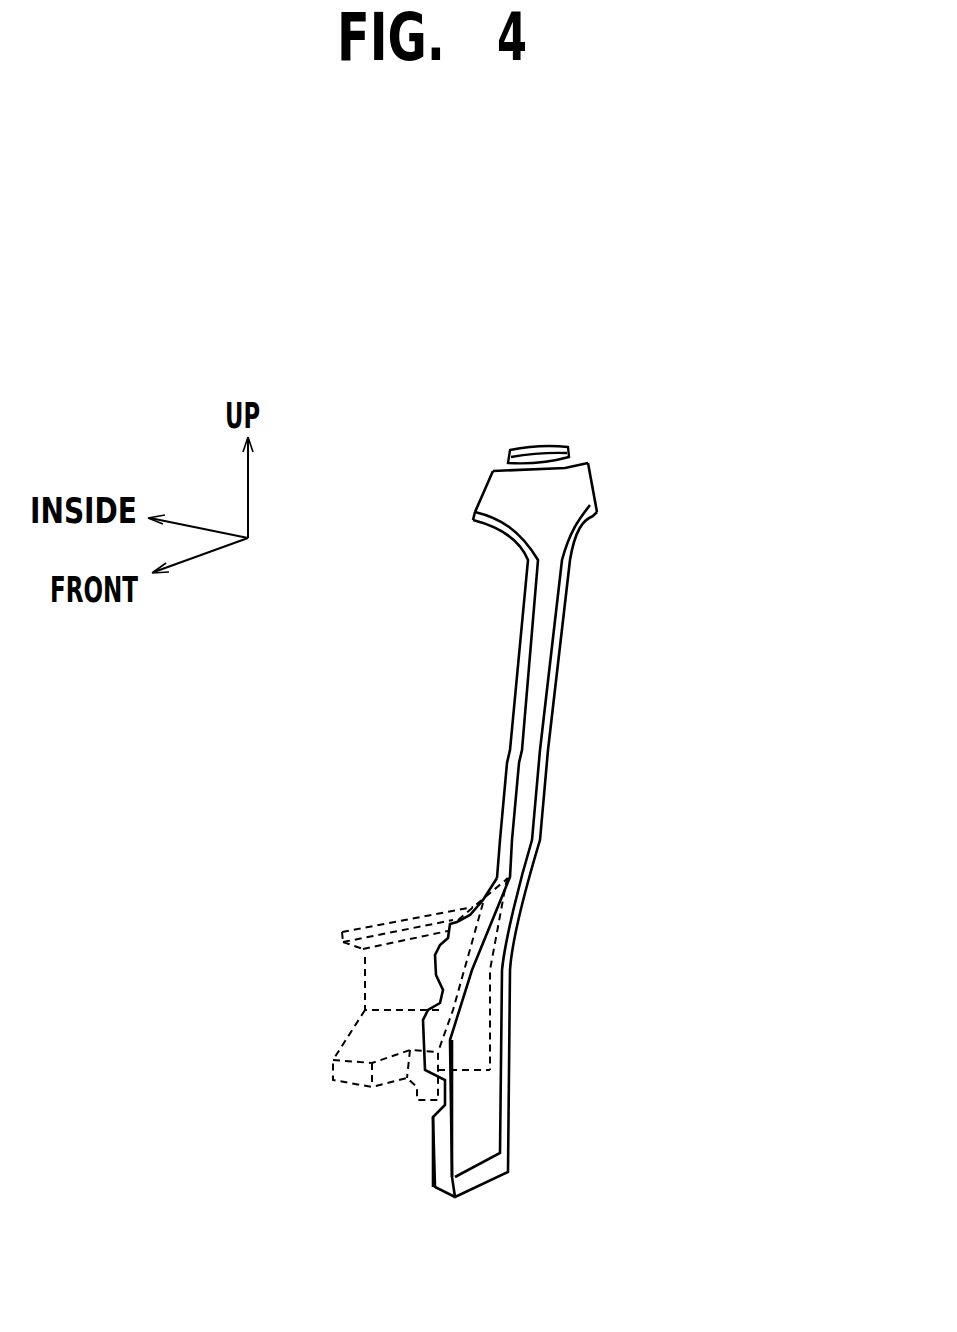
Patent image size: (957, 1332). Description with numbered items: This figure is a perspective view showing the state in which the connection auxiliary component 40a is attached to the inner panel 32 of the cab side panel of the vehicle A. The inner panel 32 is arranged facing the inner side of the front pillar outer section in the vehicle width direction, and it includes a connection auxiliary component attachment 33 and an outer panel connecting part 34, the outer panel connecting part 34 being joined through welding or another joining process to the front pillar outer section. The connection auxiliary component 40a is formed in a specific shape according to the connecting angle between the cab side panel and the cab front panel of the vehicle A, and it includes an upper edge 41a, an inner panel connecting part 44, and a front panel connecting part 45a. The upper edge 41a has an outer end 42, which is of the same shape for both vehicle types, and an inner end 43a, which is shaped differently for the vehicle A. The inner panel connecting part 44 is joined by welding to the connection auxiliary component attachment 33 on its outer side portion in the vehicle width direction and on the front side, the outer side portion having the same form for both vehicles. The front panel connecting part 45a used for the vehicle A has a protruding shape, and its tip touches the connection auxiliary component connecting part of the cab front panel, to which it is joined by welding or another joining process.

The inner panel 32 is at (540, 449).
The connection auxiliary component attachment 33 is at (437, 1022).
The outer panel connecting part 34 is at (563, 523).
The connection auxiliary component 40a is at (385, 920).
The upper edge 41a is at (408, 927).
The outer end 42 is at (472, 897).
The inner end 43a is at (372, 927).
The inner panel connecting part 44 is at (472, 993).
The front panel connecting part 45a is at (342, 1085).
The vehicle A is at (712, 1083).